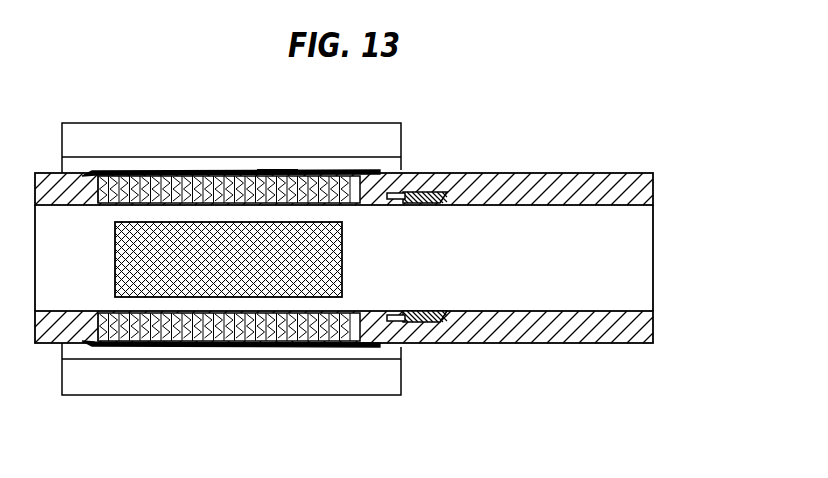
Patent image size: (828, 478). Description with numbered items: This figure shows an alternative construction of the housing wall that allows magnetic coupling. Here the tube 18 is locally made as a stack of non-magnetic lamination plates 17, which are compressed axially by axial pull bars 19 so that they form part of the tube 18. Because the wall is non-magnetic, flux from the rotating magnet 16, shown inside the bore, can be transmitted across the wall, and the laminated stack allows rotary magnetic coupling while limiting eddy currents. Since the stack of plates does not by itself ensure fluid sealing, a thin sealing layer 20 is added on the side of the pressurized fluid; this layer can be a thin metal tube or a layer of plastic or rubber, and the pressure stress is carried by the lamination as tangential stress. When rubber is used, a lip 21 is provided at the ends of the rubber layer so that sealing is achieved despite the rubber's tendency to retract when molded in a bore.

The magnet 16 is at (245, 271).
The non-magnetic lamination plates 17 is at (298, 168).
The tube 18 is at (562, 173).
The axial pull bars 19 is at (180, 168).
The thin sealing layer 20 is at (85, 173).
The lip 21 is at (415, 192).